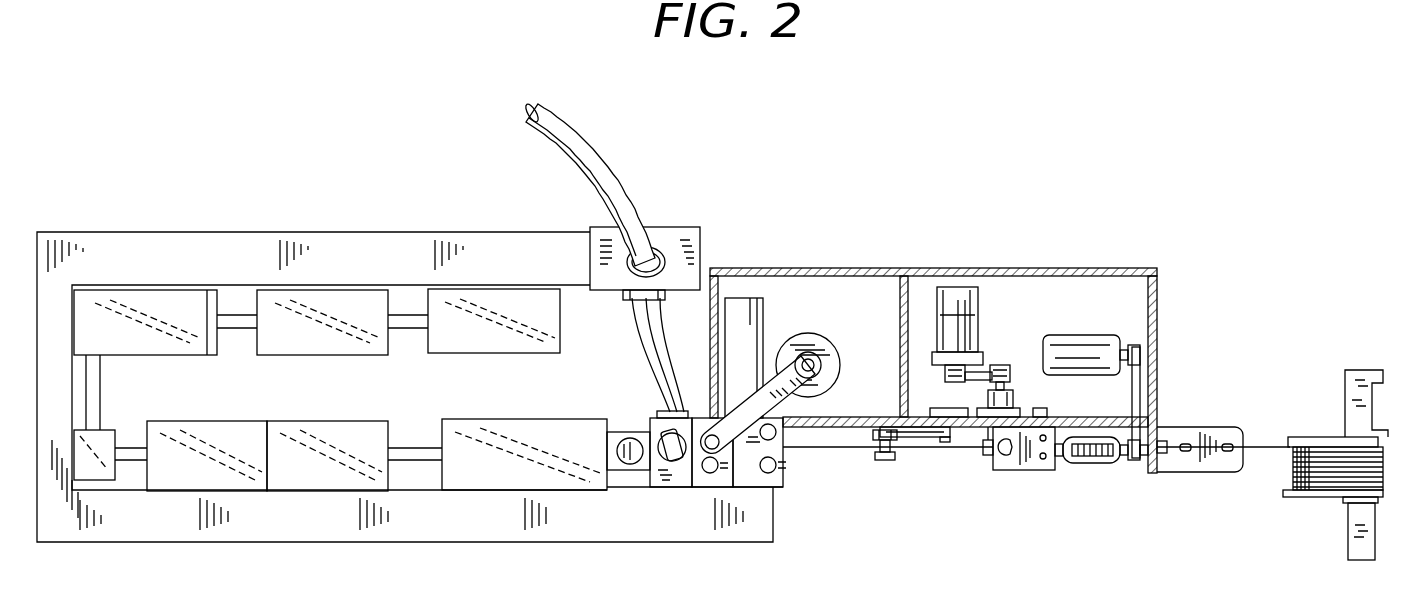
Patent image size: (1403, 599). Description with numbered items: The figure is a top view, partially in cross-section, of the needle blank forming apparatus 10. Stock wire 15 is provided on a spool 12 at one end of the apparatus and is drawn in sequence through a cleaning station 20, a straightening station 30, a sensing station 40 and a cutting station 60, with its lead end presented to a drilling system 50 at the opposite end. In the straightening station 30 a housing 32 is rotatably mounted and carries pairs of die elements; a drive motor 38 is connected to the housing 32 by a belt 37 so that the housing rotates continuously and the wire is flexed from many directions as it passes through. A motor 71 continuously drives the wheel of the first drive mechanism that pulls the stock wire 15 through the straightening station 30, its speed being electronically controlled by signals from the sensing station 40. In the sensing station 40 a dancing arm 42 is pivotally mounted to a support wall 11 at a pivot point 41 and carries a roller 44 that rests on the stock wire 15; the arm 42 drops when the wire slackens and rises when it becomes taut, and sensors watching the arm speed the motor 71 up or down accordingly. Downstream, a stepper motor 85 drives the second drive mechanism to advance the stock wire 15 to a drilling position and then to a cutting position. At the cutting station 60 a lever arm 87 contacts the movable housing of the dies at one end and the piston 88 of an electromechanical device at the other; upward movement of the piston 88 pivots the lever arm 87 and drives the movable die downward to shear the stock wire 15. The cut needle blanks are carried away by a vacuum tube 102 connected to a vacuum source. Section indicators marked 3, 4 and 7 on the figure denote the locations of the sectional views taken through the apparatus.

The needle blank forming apparatus 10 is at (992, 208).
The support wall 11 is at (872, 415).
The spool 12 is at (1325, 498).
The stock wire 15 is at (827, 450).
The cleaning station 20 is at (1222, 496).
The straightening station 30 is at (1068, 498).
The housing 32 is at (1090, 465).
The belt 37 is at (1131, 395).
The drive motor 38 is at (1075, 345).
The sensing station 40 is at (890, 470).
The pivot point 41 is at (940, 443).
The dancing arm 42 is at (915, 440).
The roller 44 is at (884, 448).
The drilling system 50 is at (567, 498).
The cutting station 60 is at (708, 498).
The motor 71 is at (975, 310).
The stepper motor 85 is at (762, 316).
The lever arm 87 is at (812, 396).
The piston 88 is at (826, 360).
The vacuum tube 102 is at (646, 344).
The section line 3 is at (1170, 470).
The section line 4 is at (955, 453).
The section line 7 is at (643, 425).